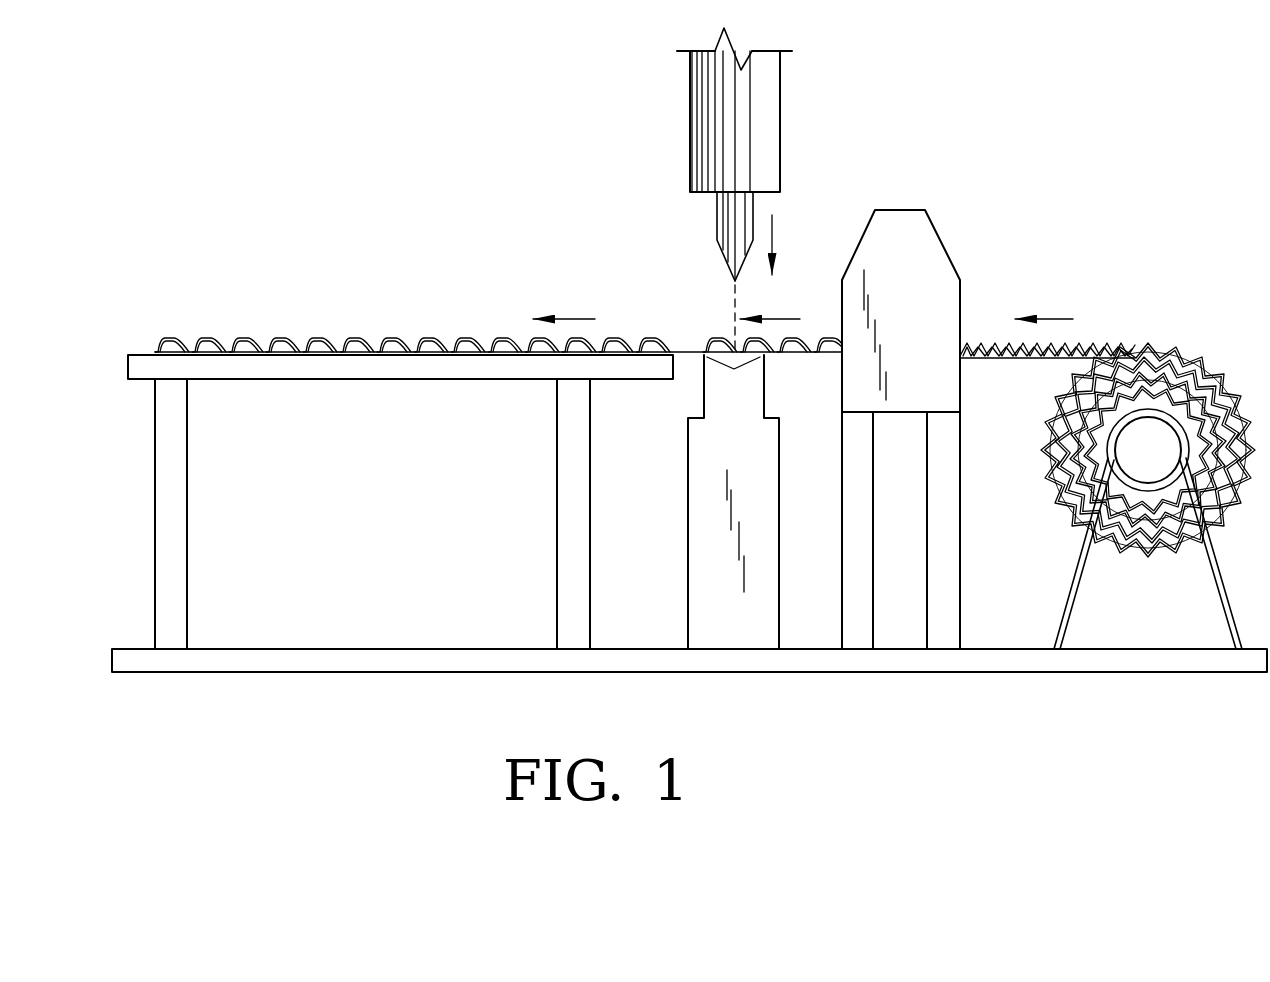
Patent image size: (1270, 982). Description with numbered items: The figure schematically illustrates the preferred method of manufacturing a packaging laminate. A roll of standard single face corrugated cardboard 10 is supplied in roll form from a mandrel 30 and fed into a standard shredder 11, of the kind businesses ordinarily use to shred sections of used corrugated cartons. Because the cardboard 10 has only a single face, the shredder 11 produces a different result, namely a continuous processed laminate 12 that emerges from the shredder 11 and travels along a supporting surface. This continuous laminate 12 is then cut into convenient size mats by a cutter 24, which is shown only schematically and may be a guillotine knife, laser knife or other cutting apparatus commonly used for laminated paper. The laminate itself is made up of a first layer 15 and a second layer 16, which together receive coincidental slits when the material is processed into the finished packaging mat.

The single face corrugated cardboard 10 is at (1182, 258).
The shredder 11 is at (970, 230).
The continuous processed laminate 12 is at (817, 310).
The first layer 15 is at (327, 345).
The second layer 16 is at (425, 357).
The cutter 24 is at (668, 118).
The mandrel 30 is at (1045, 515).